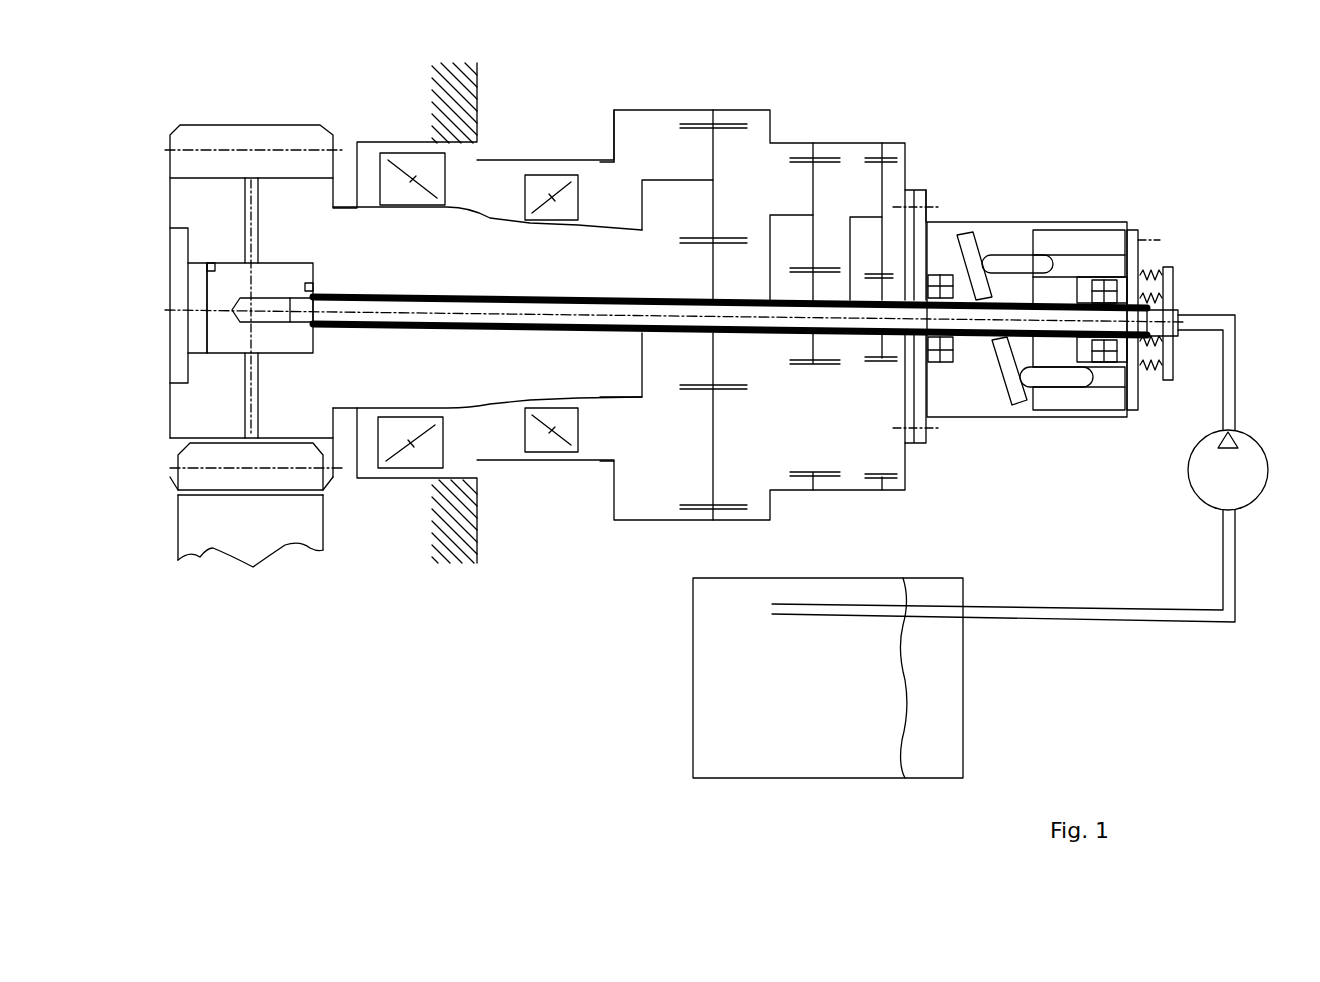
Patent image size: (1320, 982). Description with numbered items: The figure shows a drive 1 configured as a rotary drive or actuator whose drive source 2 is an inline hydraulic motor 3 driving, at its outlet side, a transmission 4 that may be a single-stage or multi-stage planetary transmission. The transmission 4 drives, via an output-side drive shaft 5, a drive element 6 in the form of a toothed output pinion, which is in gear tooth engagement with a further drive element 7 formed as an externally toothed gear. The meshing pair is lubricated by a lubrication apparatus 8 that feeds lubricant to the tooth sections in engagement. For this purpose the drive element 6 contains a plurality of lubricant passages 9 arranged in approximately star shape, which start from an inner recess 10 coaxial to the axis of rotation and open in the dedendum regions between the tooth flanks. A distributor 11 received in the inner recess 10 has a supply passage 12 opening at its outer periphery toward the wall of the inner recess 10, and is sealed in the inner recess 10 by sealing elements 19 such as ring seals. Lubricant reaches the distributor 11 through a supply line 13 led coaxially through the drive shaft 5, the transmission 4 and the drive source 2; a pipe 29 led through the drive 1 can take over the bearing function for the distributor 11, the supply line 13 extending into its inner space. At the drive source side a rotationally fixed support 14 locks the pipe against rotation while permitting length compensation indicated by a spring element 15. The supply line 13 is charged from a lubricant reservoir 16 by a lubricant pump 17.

The drive 1 is at (992, 90).
The drive source 2 is at (1070, 207).
The inline hydraulic motor 3 is at (1102, 238).
The transmission 4 is at (782, 153).
The drive shaft 5 is at (493, 232).
The drive element 6 is at (185, 208).
The further drive element 7 is at (248, 555).
The lubrication apparatus 8 is at (205, 380).
The lubricant passages 9 is at (258, 397).
The inner recess 10 is at (185, 336).
The distributor 11 is at (270, 270).
The supply passage 12 is at (265, 340).
The supply line 13 is at (440, 322).
The rotationally fixed support 14 is at (1166, 262).
The spring element 15 is at (1151, 368).
The lubricant reservoir 16 is at (912, 588).
The lubricant pump 17 is at (1252, 492).
The sealing elements 19 is at (220, 260).
The pipe 29 is at (426, 294).